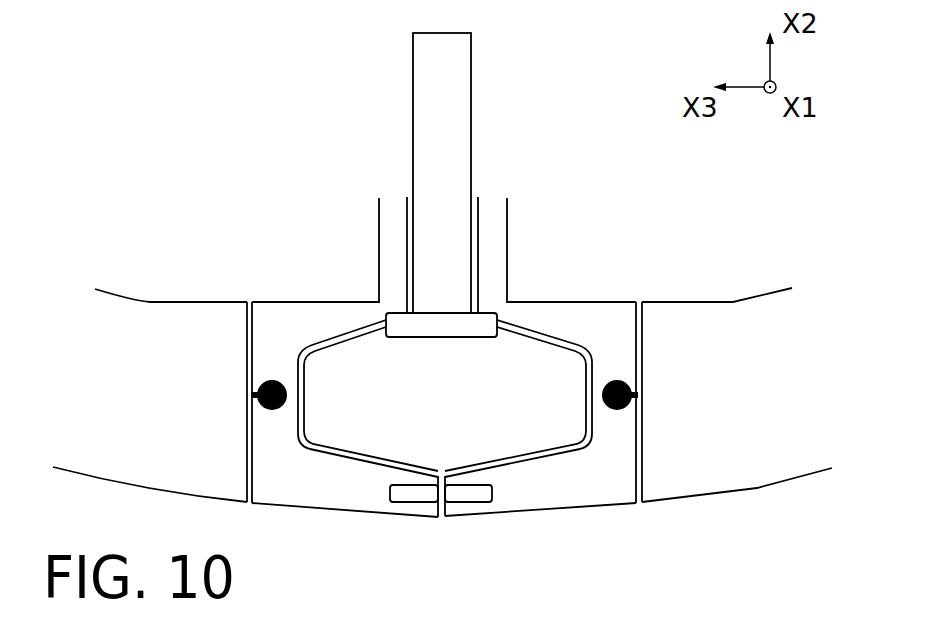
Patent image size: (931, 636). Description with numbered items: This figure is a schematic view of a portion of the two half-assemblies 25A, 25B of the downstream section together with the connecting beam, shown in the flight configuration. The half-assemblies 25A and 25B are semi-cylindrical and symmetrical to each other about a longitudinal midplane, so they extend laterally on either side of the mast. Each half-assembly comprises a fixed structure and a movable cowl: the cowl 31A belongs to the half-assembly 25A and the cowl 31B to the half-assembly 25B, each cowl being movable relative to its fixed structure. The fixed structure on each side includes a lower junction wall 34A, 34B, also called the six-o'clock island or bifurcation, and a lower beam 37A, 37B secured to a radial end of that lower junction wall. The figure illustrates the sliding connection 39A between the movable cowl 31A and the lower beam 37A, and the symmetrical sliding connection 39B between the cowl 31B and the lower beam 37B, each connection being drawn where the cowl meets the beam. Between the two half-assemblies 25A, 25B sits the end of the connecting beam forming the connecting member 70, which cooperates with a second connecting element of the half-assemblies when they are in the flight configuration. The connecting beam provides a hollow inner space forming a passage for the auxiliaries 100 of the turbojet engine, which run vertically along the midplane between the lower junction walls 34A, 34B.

The auxiliaries 100 is at (413, 157).
The half-assembly 25A is at (357, 187).
The half-assembly 25B is at (793, 187).
The cowl 31A is at (175, 300).
The cowl 31B is at (700, 300).
The lower beam 37A is at (300, 300).
The lower beam 37B is at (585, 300).
The lower junction wall 34A is at (378, 267).
The lower junction wall 34B is at (507, 248).
The sliding connection 39A is at (273, 410).
The sliding connection 39B is at (613, 410).
The connecting member 70 is at (523, 428).